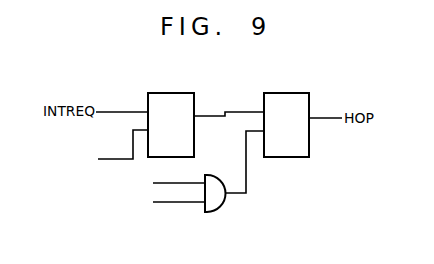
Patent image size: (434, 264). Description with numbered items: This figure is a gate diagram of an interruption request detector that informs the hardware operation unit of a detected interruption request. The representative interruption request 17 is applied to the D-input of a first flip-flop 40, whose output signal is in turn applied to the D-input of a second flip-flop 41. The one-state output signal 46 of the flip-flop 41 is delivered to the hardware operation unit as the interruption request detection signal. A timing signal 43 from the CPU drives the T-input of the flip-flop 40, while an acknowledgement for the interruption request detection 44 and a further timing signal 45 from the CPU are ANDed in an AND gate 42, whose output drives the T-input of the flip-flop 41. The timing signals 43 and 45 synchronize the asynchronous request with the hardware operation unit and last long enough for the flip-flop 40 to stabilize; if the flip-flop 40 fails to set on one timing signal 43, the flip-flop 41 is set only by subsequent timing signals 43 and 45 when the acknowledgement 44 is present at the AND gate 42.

The representative interruption request 17 is at (121, 111).
The flip-flop 40 is at (182, 93).
The flip-flop 41 is at (300, 93).
The AND gate 42 is at (222, 210).
The timing signal 43 is at (116, 160).
The acknowledgement for the interruption request detection 44 is at (180, 183).
The timing signal 45 is at (180, 202).
The "1" output signal 46 is at (327, 118).